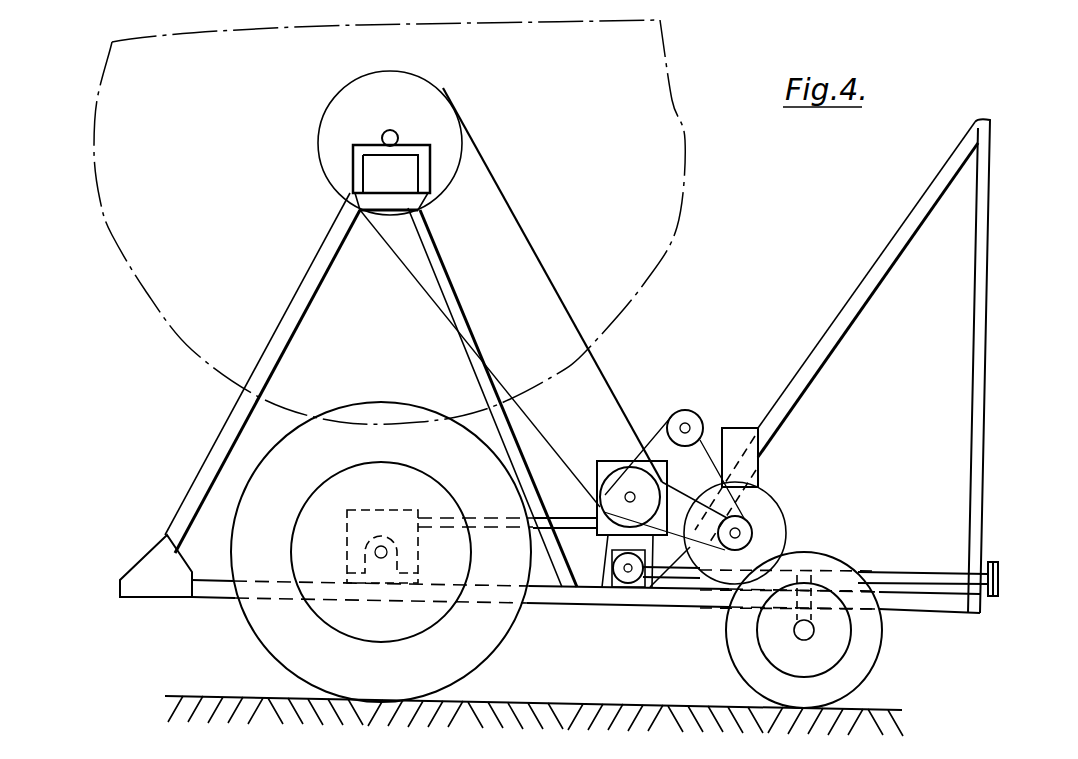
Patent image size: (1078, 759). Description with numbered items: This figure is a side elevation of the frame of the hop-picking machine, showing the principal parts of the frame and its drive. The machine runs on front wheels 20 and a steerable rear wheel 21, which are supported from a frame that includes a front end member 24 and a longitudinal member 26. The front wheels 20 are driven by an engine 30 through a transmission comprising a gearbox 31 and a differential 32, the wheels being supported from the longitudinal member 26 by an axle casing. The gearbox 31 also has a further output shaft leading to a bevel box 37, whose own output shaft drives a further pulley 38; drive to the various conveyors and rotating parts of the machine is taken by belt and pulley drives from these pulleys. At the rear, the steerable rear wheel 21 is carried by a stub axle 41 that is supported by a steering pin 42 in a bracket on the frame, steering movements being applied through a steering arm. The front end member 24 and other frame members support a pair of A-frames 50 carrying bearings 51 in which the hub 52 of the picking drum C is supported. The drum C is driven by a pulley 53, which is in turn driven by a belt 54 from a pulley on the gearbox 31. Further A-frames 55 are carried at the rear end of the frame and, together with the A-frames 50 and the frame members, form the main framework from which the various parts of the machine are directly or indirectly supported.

The picking drum C is at (96, 265).
The front wheels 20 is at (483, 648).
The steerable rear wheel 21 is at (867, 672).
The front end member 24 is at (172, 585).
The longitudinal member 26 is at (588, 600).
The engine 30 is at (750, 480).
The gearbox 31 is at (610, 462).
The differential 32 is at (362, 512).
The bevel box 37 is at (640, 600).
The pulley 38 is at (1000, 585).
The stub axle 41 is at (815, 636).
The steering pin 42 is at (812, 600).
The A-frames 50 is at (312, 280).
The bearings 51 is at (435, 177).
The hub 52 is at (400, 134).
The pulley 53 is at (440, 100).
The belt 54 is at (533, 248).
The A-frames 55 is at (895, 248).